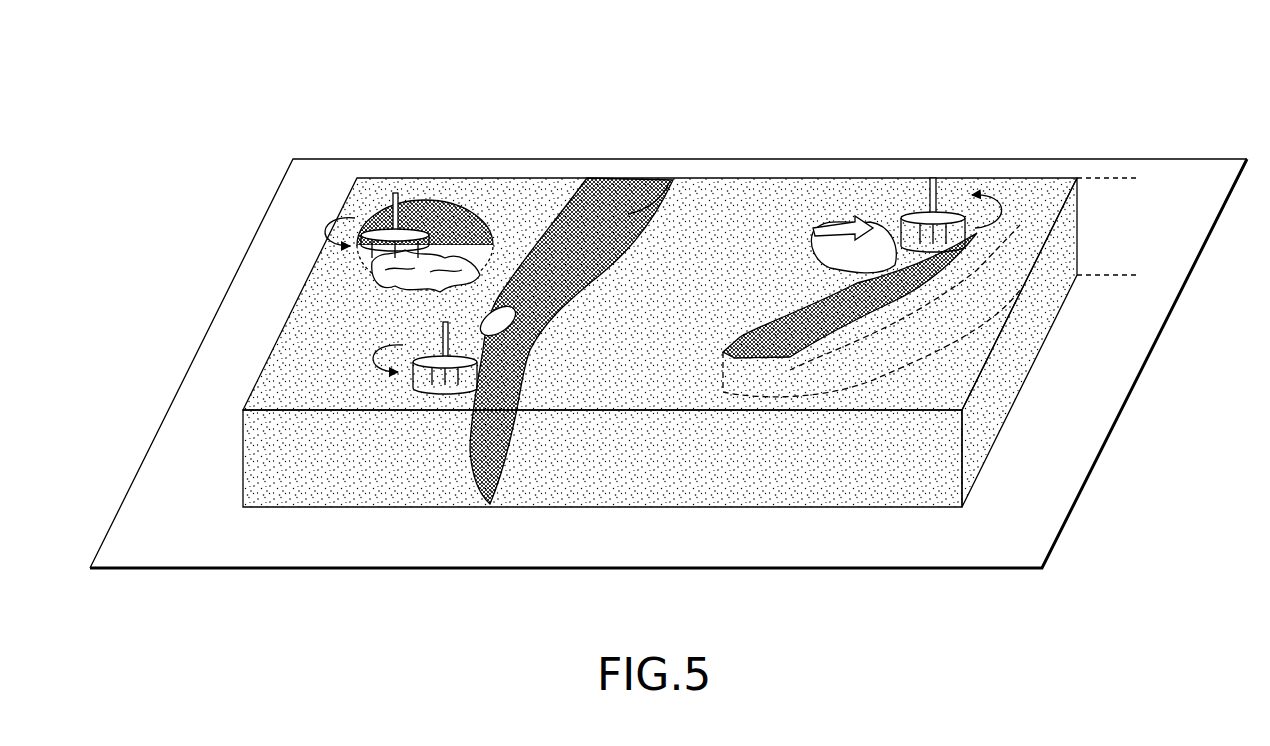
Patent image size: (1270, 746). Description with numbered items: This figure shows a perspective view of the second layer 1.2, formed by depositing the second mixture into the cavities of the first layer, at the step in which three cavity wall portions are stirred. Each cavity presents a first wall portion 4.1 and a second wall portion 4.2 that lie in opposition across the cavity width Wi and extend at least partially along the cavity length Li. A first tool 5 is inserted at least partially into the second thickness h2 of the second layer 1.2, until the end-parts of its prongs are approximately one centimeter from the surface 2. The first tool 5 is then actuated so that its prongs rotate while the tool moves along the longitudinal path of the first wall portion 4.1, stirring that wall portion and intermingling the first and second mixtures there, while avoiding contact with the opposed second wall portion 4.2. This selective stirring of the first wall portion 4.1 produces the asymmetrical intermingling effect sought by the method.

The second layer 1.2 is at (308, 96).
The surface 2 is at (928, 548).
The first wall portion 4.1 is at (378, 245).
The second wall portion 4.2 is at (410, 195).
The first tool 5 is at (352, 212).
The cavity width Wi is at (433, 220).
The cavity length Li is at (480, 445).
The second thickness h2 is at (1128, 180).